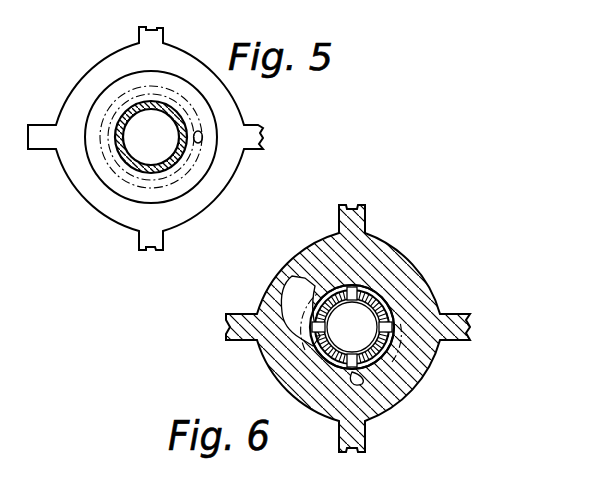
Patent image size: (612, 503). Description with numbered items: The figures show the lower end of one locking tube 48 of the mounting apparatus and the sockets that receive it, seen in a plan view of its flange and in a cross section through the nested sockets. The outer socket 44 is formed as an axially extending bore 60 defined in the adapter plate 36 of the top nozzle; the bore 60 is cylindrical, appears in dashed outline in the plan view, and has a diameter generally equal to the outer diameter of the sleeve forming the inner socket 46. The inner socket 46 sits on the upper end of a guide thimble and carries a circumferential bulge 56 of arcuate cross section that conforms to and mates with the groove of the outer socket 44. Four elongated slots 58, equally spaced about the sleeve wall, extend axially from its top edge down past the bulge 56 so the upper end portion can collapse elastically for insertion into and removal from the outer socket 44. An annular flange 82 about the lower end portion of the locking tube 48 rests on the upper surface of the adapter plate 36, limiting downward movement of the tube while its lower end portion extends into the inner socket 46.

In FIG. 5, the adapter plate 36 is at (173, 218).
In FIG. 6, the adapter plate 36 is at (387, 245).
In FIG. 5, the outer socket 44 is at (134, 179).
In FIG. 6, the outer socket 44 is at (393, 293).
In FIG. 6, the inner socket 46 is at (420, 374).
In FIG. 5, the locking tube 48 is at (176, 160).
In FIG. 6, the locking tube 48 is at (348, 365).
In FIG. 6, the circumferential bulge 56 is at (313, 353).
In FIG. 6, the elongated slots 58 is at (352, 285).
In FIG. 5, the bore 60 is at (113, 163).
In FIG. 5, the annular flange 82 is at (217, 153).